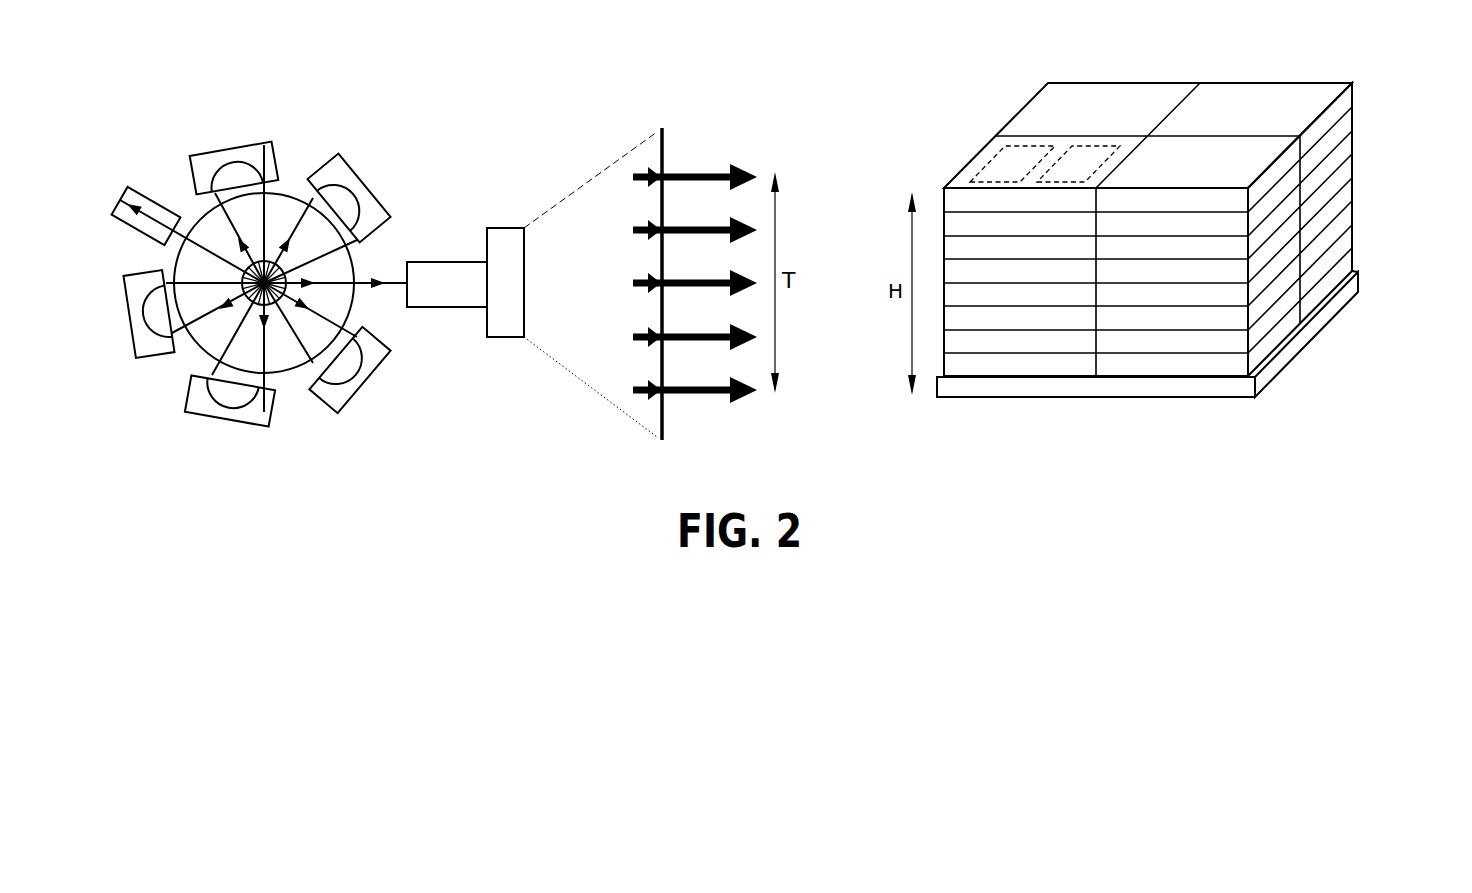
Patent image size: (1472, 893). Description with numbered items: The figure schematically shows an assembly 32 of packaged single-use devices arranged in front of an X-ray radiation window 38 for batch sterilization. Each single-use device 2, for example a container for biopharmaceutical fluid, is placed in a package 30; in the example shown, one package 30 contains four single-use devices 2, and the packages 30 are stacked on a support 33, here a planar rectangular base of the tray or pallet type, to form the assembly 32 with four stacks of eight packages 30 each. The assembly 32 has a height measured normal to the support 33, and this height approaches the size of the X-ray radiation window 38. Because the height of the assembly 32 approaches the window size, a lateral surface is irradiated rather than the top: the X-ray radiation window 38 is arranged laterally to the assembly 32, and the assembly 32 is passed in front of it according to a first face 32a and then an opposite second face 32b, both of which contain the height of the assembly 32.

The single-use device 2 is at (1020, 158).
The package 30 is at (1273, 312).
The assembly 32 is at (1368, 105).
The first face 32a is at (955, 122).
The second face 32b is at (1352, 187).
The support 33 is at (969, 384).
The X-ray radiation window 38 is at (663, 143).